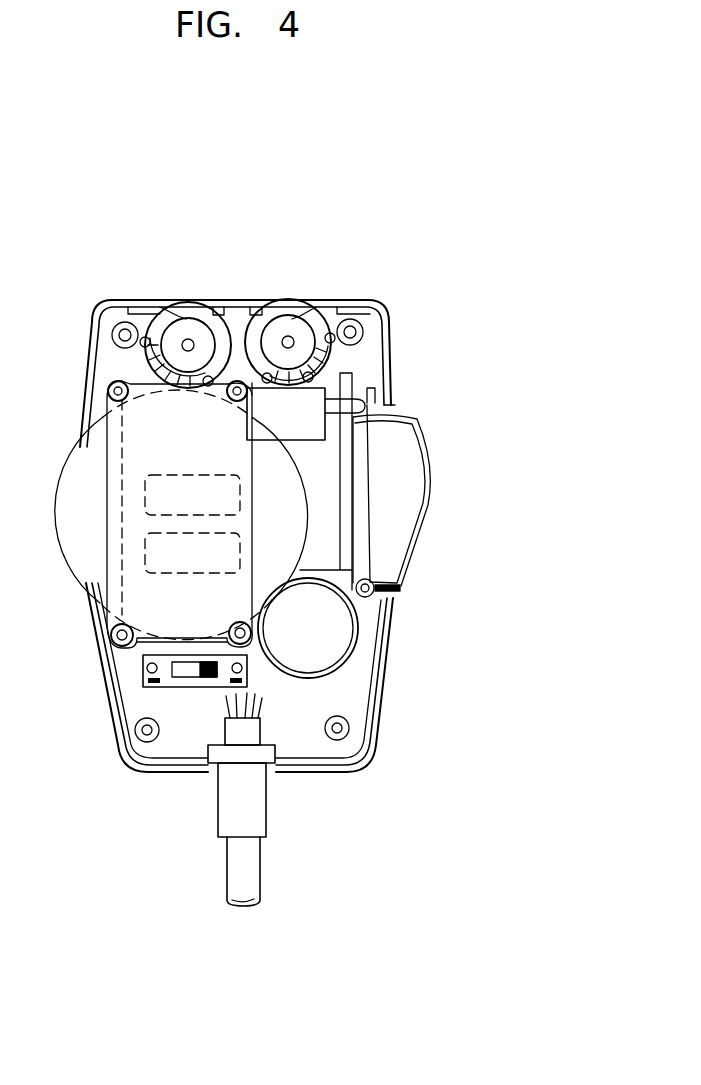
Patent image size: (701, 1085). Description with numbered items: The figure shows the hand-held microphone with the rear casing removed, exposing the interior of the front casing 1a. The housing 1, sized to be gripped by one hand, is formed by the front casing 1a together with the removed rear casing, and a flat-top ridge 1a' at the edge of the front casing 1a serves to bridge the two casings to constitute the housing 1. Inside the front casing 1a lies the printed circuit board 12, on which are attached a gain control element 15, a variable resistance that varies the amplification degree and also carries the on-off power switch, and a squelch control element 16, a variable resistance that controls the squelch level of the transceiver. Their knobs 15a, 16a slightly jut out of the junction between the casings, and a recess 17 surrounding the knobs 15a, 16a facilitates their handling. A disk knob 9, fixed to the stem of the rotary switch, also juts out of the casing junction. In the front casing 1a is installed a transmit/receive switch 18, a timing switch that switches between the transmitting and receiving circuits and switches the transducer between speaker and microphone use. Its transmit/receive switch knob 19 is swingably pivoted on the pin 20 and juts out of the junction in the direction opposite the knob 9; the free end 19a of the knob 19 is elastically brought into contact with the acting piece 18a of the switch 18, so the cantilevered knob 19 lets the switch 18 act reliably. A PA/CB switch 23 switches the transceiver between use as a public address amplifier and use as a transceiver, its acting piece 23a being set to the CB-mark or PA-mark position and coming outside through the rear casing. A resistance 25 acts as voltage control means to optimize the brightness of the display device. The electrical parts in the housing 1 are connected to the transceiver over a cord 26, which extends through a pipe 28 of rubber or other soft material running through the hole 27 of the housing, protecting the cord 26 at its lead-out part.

The housing 1 is at (92, 332).
The front casing 1a is at (261, 536).
The flat-top ridge 1a' is at (261, 670).
The disk knob 9 is at (78, 560).
The printed circuit board 12 is at (345, 498).
The gain control element 15 is at (167, 350).
The knob 15a is at (177, 312).
The squelch control element 16 is at (340, 357).
The knob 16a is at (320, 322).
The recess 17 is at (212, 302).
The transmit/receive switch 18 is at (327, 433).
The acting piece 18a is at (393, 398).
The transmit/receive switch knob 19 is at (405, 543).
The free end 19a is at (392, 412).
The pin 20 is at (400, 588).
The PA/CB switch 23 is at (143, 655).
The acting piece 23a is at (213, 678).
The resistance 25 is at (145, 493).
The cord 26 is at (252, 867).
The hole 27 is at (272, 773).
The pipe 28 is at (222, 812).